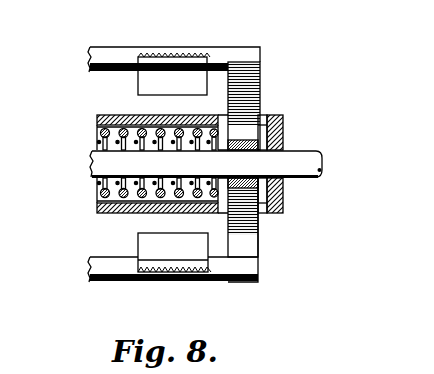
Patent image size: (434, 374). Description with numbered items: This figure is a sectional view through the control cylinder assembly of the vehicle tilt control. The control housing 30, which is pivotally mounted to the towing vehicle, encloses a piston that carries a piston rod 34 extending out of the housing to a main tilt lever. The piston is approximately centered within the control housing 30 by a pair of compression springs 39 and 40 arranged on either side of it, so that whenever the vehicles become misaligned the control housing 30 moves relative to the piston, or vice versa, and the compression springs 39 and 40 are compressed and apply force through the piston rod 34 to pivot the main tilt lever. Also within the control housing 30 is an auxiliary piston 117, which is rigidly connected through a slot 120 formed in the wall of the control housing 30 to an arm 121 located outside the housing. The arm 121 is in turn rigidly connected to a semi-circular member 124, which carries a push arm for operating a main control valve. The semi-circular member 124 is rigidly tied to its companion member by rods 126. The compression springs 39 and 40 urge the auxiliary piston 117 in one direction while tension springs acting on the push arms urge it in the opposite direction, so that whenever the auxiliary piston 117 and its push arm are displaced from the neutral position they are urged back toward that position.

The control housing 30 is at (108, 210).
The piston rod 34 is at (93, 172).
The compression spring 39 is at (110, 117).
The compression spring 40 is at (101, 140).
The auxiliary piston 117 is at (283, 193).
The slot 120 is at (267, 115).
The arm 121 is at (250, 77).
The semi-circular member 124 is at (163, 72).
The rod 126 is at (233, 57).